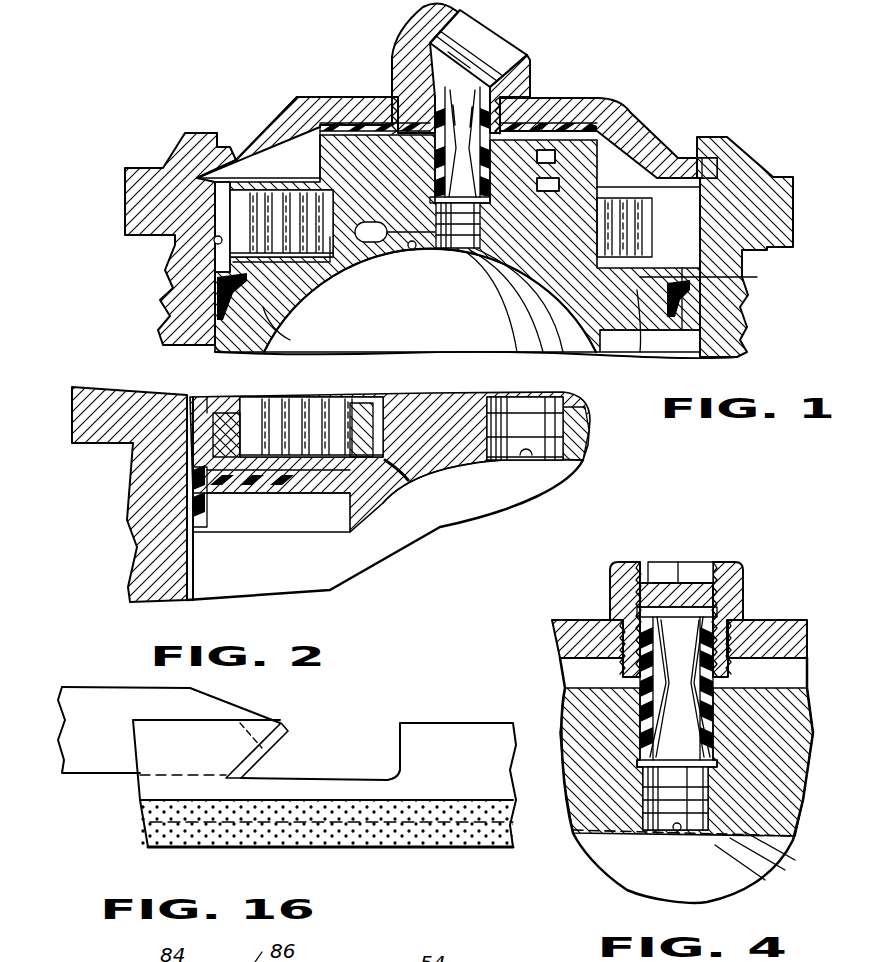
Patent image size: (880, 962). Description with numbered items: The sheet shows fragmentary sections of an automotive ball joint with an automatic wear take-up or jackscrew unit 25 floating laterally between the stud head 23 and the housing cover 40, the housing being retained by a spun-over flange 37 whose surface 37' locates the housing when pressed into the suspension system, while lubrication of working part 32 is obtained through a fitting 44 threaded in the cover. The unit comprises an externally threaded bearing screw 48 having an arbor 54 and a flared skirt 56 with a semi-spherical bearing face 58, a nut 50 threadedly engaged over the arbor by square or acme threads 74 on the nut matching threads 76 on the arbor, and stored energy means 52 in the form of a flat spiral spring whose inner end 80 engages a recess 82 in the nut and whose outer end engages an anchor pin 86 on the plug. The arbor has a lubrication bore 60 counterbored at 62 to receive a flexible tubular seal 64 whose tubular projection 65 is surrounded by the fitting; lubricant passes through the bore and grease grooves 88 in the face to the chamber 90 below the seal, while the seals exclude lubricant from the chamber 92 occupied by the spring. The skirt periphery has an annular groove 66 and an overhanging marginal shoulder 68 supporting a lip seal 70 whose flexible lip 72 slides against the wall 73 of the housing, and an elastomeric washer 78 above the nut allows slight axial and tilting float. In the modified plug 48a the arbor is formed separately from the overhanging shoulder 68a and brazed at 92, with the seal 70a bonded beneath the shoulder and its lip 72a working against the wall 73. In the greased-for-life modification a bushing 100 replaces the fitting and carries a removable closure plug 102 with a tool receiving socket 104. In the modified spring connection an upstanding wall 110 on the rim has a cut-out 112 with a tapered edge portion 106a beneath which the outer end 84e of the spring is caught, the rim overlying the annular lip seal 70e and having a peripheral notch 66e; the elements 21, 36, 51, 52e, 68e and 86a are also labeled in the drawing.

In FIG. 2, the inner surface 21 is at (260, 570).
In FIG. 1, the head 23 is at (563, 333).
In FIG. 1, the jackscrew unit 25 is at (660, 138).
In FIG. 1, the working part 32 is at (526, 344).
In FIG. 1, the flange 36 is at (210, 140).
In FIG. 1, the flange 37 is at (150, 239).
In FIG. 1, the surface 37' is at (771, 247).
In FIG. 1, the cover 40 is at (367, 105).
In FIG. 4, the cover 40 is at (783, 633).
In FIG. 1, the fitting 44 is at (522, 68).
In FIG. 1, the bearing screw 48 is at (557, 263).
In FIG. 2, the bearing plug 48a is at (453, 443).
In FIG. 1, the nut 50 is at (330, 150).
In FIG. 1, the chamber wall 51 is at (493, 307).
In FIG. 1, the stored energy means 52 is at (650, 235).
In FIG. 16, the member 52e is at (122, 739).
In FIG. 1, the arbor 54 is at (517, 177).
In FIG. 2, the arbor 54 is at (433, 405).
In FIG. 4, the arbor 54 is at (780, 737).
In FIG. 1, the flared skirt 56 is at (637, 295).
In FIG. 1, the bearing face 58 is at (360, 270).
In FIG. 1, the lubrication bore 60 is at (470, 250).
In FIG. 1, the counterbore 62 is at (481, 226).
In FIG. 2, the counterbore 62 is at (525, 428).
In FIG. 4, the counterbore 62 is at (745, 770).
In FIG. 1, the tubular seal 64 is at (465, 163).
In FIG. 4, the tubular seal 64 is at (691, 705).
In FIG. 1, the tubular projection 65 is at (457, 95).
In FIG. 4, the tubular projection 65 is at (703, 643).
In FIG. 1, the annular groove 66 is at (263, 307).
In FIG. 16, the peripheral notch 66e is at (173, 807).
In FIG. 1, the marginal shoulder 68 is at (715, 286).
In FIG. 2, the overhanging shoulder 68a is at (197, 473).
In FIG. 16, the layer 68e is at (153, 783).
In FIG. 1, the lip seal 70 is at (212, 317).
In FIG. 2, the seal 70a is at (236, 495).
In FIG. 16, the annular lip seal 70e is at (437, 833).
In FIG. 1, the flexible lip 72 is at (220, 322).
In FIG. 2, the lip 72a is at (193, 533).
In FIG. 1, the wall 73 is at (214, 240).
In FIG. 2, the wall 73 is at (193, 590).
In FIG. 1, the threads 74 is at (600, 177).
In FIG. 1, the threads 76 is at (547, 160).
In FIG. 1, the elastomeric washer 78 is at (585, 128).
In FIG. 1, the inner end 80 is at (340, 252).
In FIG. 2, the inner end 80 is at (311, 427).
In FIG. 1, the recess 82 is at (363, 270).
In FIG. 16, the outer end 84e is at (270, 750).
In FIG. 1, the anchor pin 86 is at (243, 260).
In FIG. 2, the channel 86a is at (223, 442).
In FIG. 1, the grease grooves 88 is at (410, 250).
In FIG. 1, the chamber 90 is at (685, 348).
In FIG. 1, the chamber 92 is at (312, 177).
In FIG. 2, the chamber 92 is at (393, 463).
In FIG. 4, the bushing 100 is at (740, 577).
In FIG. 4, the closure plug 102 is at (654, 594).
In FIG. 4, the tool receiving socket 104 is at (697, 567).
In FIG. 16, the tapered edge portion 106a is at (283, 730).
In FIG. 16, the wall 110 is at (487, 740).
In FIG. 16, the cut-out 112 is at (400, 762).